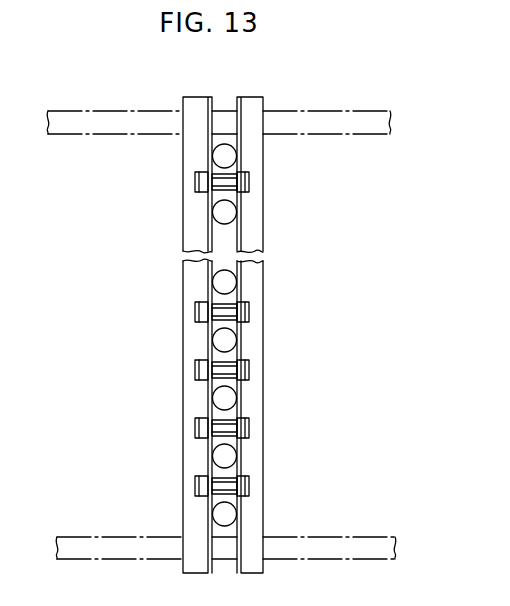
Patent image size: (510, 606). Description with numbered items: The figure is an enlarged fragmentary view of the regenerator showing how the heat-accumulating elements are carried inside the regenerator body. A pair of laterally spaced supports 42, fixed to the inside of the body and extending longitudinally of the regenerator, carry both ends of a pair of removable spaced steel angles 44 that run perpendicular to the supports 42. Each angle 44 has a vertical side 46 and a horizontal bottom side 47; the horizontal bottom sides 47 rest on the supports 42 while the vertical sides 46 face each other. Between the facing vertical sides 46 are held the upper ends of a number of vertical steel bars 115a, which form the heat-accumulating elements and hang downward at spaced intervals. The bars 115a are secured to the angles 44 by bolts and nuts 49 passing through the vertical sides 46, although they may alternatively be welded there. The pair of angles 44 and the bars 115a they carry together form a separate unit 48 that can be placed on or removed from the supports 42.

The support 42 is at (362, 134).
The steel angle 44 is at (200, 97).
The vertical side 46 is at (212, 331).
The horizontal bottom side 47 is at (192, 398).
The unit 48 is at (190, 152).
The bolts and nuts 49 is at (249, 370).
The vertical steel bar 115a is at (228, 278).